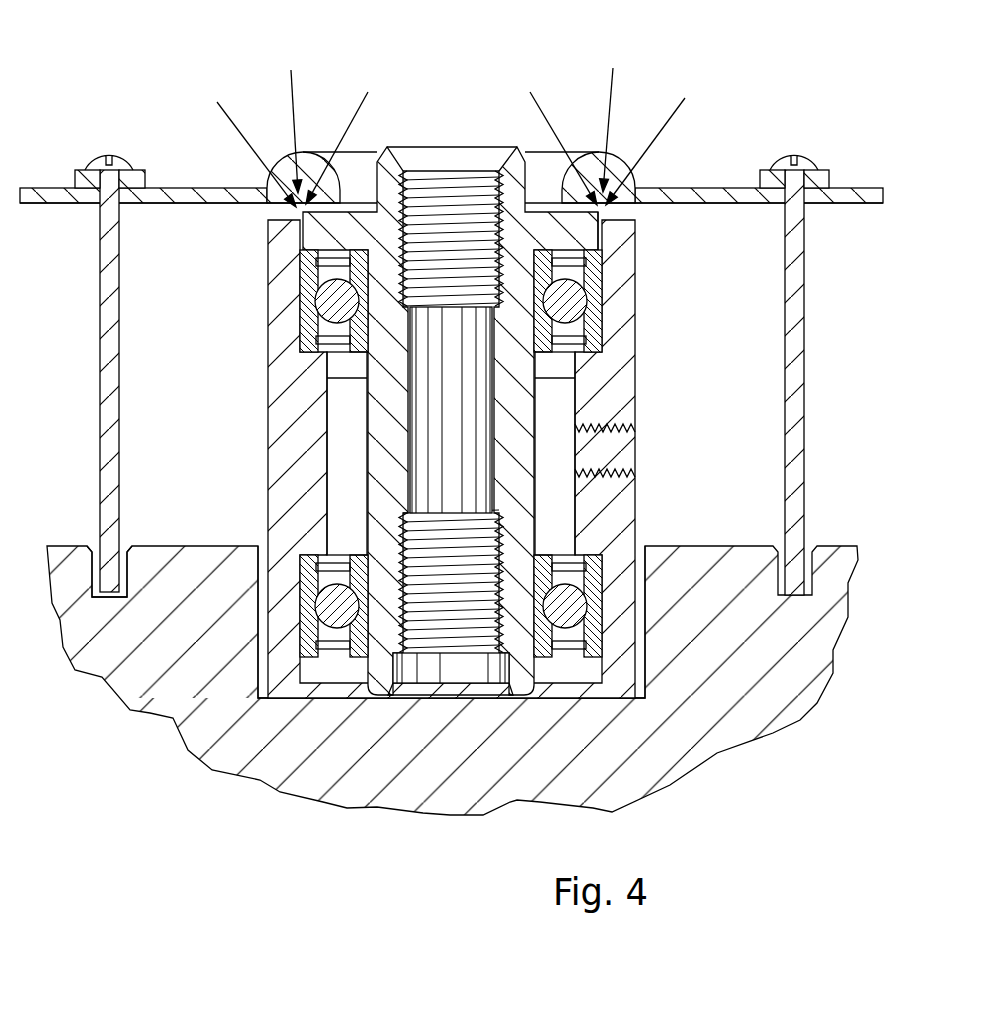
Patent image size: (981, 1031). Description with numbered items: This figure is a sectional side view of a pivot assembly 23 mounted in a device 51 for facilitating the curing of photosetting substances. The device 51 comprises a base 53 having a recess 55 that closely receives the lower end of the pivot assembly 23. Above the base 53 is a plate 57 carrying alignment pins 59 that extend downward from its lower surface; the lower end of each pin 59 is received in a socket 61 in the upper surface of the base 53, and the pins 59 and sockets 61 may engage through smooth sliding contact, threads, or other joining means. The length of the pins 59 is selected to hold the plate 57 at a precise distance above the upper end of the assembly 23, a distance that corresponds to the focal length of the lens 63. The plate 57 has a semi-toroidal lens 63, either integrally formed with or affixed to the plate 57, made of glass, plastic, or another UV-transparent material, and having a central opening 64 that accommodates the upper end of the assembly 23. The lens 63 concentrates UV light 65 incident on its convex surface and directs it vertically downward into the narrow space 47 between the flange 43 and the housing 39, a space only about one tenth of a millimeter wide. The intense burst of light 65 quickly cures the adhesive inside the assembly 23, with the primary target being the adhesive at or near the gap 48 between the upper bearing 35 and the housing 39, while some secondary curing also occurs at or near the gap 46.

The pivot assembly 23 is at (214, 236).
The upper bearing 35 is at (580, 294).
The housing 39 is at (273, 464).
The flange 43 is at (379, 157).
The gap 46 is at (325, 376).
The space 47 is at (607, 225).
The gap 48 is at (315, 285).
The device 51 is at (121, 100).
The base 53 is at (670, 546).
The recess 55 is at (263, 563).
The plate 57 is at (213, 195).
The alignment pin 59 is at (118, 401).
The socket 61 is at (122, 560).
The semi-toroidal lens 63 is at (361, 210).
The central opening 64 is at (543, 190).
The UV light 65 is at (350, 117).